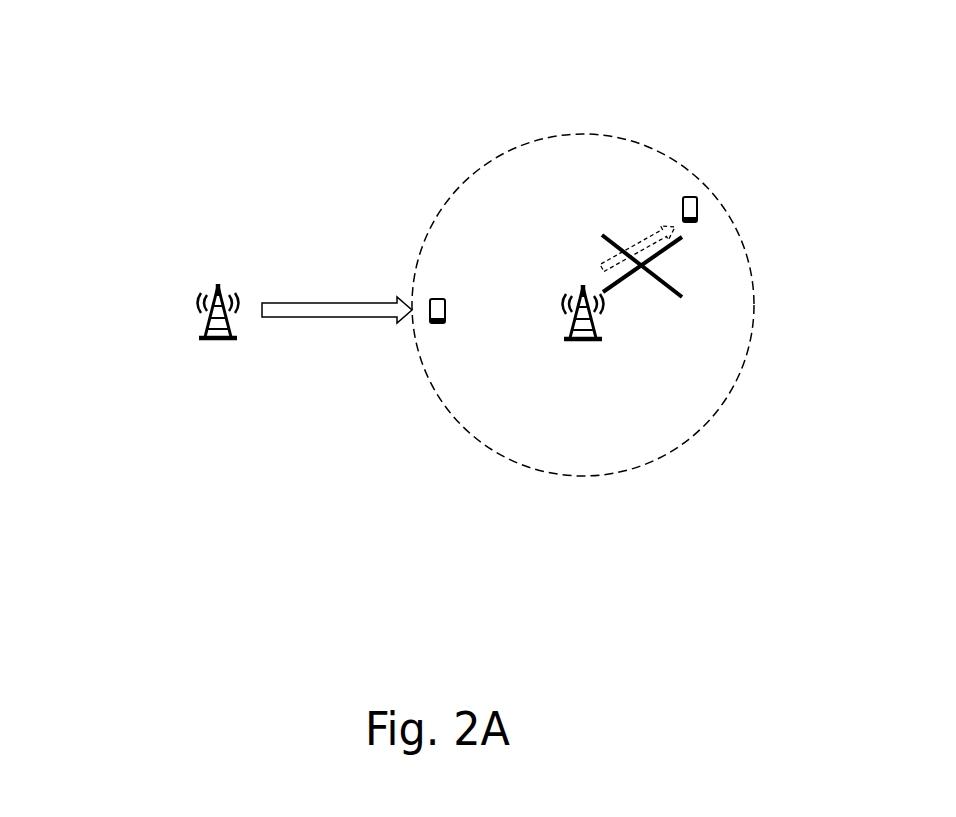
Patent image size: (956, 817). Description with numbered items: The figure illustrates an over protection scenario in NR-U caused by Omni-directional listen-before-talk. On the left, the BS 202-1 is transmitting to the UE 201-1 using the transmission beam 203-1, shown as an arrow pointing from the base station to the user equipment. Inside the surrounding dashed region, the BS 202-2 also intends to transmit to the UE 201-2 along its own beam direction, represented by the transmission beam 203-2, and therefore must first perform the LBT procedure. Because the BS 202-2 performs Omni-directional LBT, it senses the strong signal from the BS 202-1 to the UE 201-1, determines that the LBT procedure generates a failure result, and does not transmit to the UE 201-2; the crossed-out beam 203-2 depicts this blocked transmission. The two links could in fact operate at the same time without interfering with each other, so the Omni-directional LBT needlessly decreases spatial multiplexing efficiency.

The UE 201-1 is at (436, 297).
The UE 201-2 is at (699, 208).
The BS 202-1 is at (200, 342).
The BS 202-2 is at (583, 343).
The transmission beam 203-1 is at (317, 295).
The transmission beam 203-2 is at (636, 225).